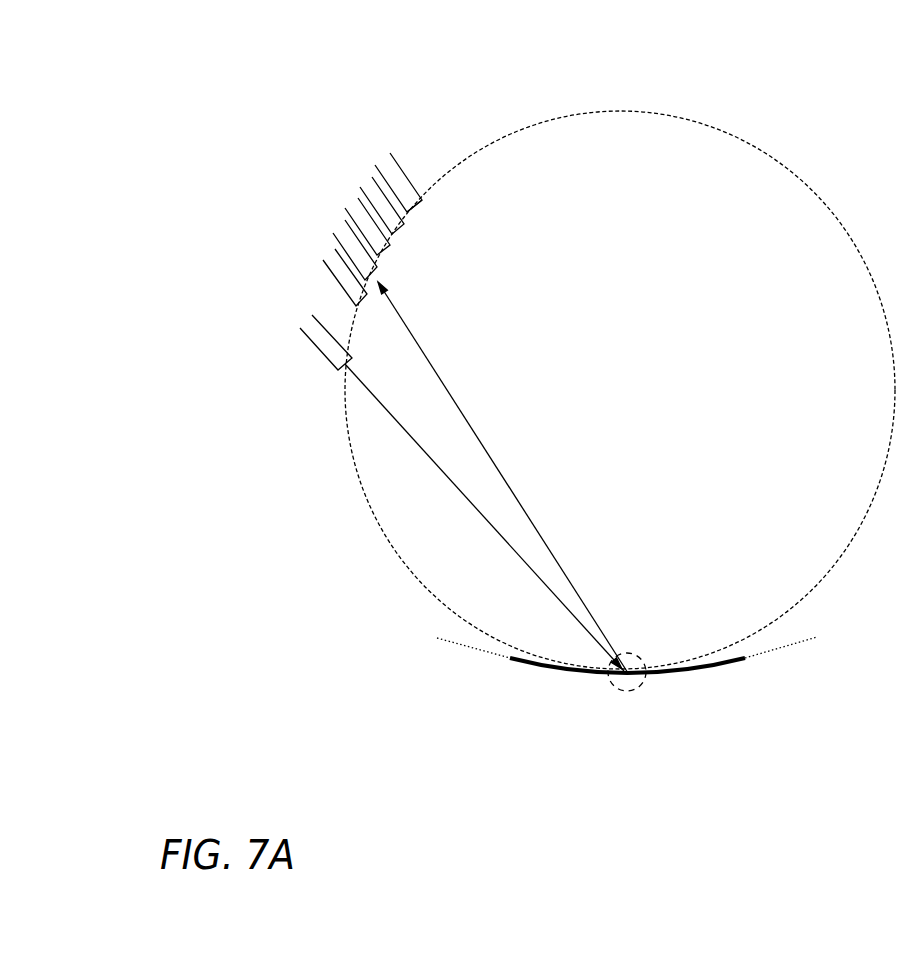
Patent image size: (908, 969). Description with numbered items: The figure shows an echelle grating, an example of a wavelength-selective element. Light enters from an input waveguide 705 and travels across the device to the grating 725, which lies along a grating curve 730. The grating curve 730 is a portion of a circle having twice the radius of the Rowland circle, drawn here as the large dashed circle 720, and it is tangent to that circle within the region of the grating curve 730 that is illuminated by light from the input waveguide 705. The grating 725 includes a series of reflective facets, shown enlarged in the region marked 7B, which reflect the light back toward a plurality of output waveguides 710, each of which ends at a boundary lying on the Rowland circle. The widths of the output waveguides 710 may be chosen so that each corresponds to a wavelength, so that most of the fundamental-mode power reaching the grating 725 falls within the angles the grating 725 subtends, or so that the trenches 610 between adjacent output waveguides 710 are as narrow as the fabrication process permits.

The eye / spherical body 720 is at (785, 167).
The grating 725 is at (552, 673).
The grating curve 730 is at (767, 655).
The detail region of FIG. 7B is at (632, 690).
The output waveguides 710 is at (378, 158).
The trenches 610 is at (405, 212).
The input waveguide 705 is at (322, 348).